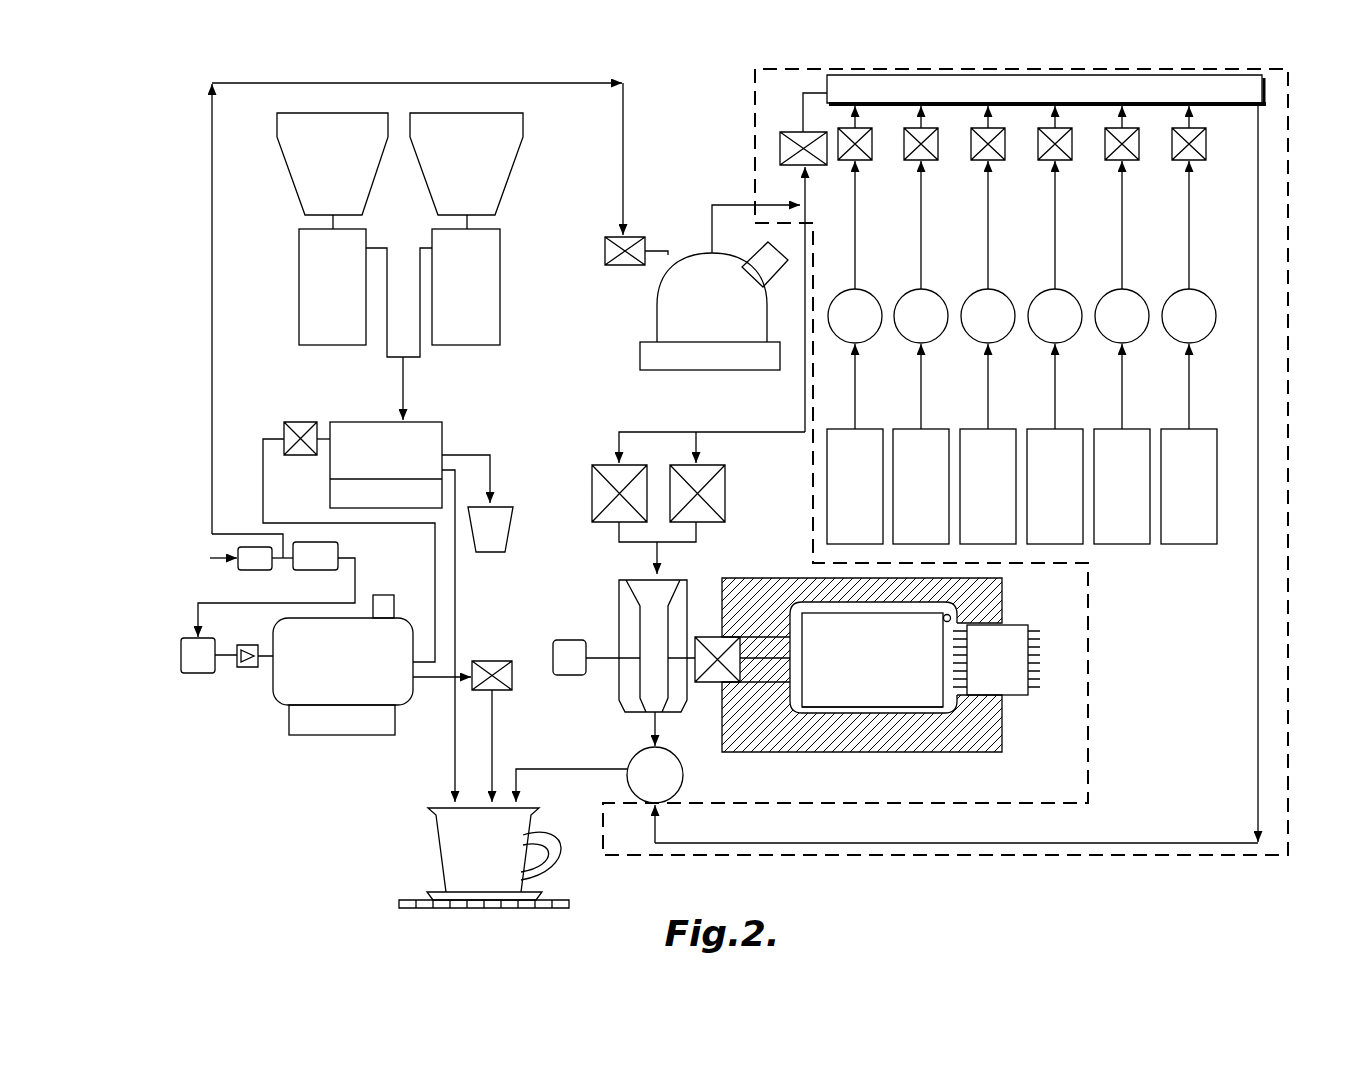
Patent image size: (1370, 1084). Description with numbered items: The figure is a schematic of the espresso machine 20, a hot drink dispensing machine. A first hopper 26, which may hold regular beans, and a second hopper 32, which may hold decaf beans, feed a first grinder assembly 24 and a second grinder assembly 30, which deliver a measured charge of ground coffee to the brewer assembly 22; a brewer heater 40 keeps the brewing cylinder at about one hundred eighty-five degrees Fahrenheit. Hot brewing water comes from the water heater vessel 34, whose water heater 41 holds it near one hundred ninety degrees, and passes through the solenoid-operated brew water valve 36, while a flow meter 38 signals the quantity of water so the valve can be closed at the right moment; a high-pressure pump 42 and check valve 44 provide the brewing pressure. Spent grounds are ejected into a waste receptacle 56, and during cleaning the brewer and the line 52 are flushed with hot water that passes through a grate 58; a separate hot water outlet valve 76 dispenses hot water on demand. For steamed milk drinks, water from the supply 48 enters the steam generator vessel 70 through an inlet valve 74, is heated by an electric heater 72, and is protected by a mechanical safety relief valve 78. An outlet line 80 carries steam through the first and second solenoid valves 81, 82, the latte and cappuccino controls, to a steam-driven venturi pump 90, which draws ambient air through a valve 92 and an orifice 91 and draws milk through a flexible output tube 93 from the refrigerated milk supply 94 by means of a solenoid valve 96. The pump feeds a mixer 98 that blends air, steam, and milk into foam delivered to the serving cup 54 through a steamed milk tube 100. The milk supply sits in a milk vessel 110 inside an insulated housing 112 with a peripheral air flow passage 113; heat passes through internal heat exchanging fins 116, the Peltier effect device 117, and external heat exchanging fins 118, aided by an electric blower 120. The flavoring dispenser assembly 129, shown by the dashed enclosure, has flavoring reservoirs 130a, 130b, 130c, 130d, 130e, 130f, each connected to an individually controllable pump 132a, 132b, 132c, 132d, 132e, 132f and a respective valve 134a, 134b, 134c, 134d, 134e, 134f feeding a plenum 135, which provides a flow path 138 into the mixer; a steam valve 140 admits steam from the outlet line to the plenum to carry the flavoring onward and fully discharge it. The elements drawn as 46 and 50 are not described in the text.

The espresso machine 20 is at (309, 801).
The brewer assembly 22 is at (374, 462).
The first grinder assembly 24 is at (321, 294).
The first hopper 26 is at (321, 171).
The second grinder assembly 30 is at (455, 294).
The second hopper 32 is at (455, 169).
The water heater vessel 34 is at (331, 669).
The brew water valve 36 is at (300, 455).
The flow meter 38 is at (191, 668).
The brewer heater 40 is at (374, 504).
The water heater 41 is at (330, 727).
The high-pressure pump 42 is at (318, 570).
The check valve 44 is at (250, 667).
The water filter 46 is at (253, 570).
The water supply 48 is at (214, 558).
The temperature sensor 50 is at (385, 595).
The line 52 is at (455, 580).
The serving cup 54 is at (471, 860).
The waste receptacle 56 is at (507, 530).
The grate 58 is at (406, 900).
The steam generator vessel 70 is at (700, 312).
The electric heater 72 is at (647, 355).
The inlet valve 74 is at (618, 265).
The hot water outlet valve 76 is at (512, 675).
The mechanical safety relief valve 78 is at (777, 274).
The outlet line 80 is at (712, 205).
The first solenoid valve 81 is at (592, 492).
The second solenoid valve 82 is at (726, 492).
The steam-driven venturi pump 90 is at (634, 583).
The orifice 91 is at (604, 657).
The valve 92 is at (553, 657).
The flexible output tube 93 is at (762, 660).
The refrigerated milk supply 94 is at (811, 699).
The solenoid valve 96 is at (707, 638).
The mixer 98 is at (643, 786).
The steamed milk tube 100 is at (540, 769).
The milk vessel 110 is at (883, 707).
The insulated housing 112 is at (808, 752).
The peripheral air flow passage 113 is at (950, 712).
The heat exchanging fins 116 is at (965, 677).
The Peltier effect device 117 is at (981, 667).
The external heat exchanging fins 118 is at (1040, 650).
The electric blower 120 is at (951, 616).
The flavoring dispenser assembly 129 is at (1298, 358).
The flavoring reservoir 130a is at (833, 498).
The flavoring reservoir 130b is at (899, 498).
The flavoring reservoir 130c is at (966, 498).
The flavoring reservoir 130d is at (1033, 498).
The flavoring reservoir 130e is at (1100, 498).
The flavoring reservoir 130f is at (1167, 498).
The pump 132a is at (833, 326).
The pump 132b is at (899, 326).
The pump 132c is at (966, 326).
The pump 132d is at (1033, 326).
The pump 132e is at (1100, 326).
The pump 132f is at (1167, 326).
The valve 134a is at (866, 160).
The valve 134b is at (932, 160).
The valve 134c is at (999, 160).
The valve 134d is at (1066, 160).
The valve 134e is at (1133, 160).
The valve 134f is at (1200, 160).
The plenum 135 is at (1228, 108).
The flow path 138 is at (1258, 240).
The steam valve 140 is at (780, 150).